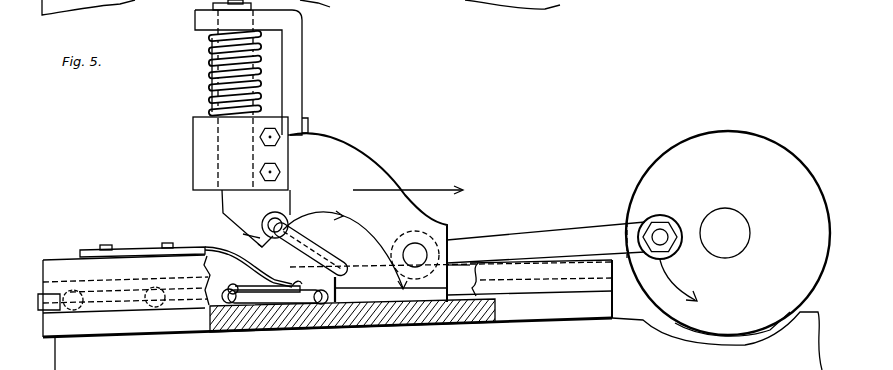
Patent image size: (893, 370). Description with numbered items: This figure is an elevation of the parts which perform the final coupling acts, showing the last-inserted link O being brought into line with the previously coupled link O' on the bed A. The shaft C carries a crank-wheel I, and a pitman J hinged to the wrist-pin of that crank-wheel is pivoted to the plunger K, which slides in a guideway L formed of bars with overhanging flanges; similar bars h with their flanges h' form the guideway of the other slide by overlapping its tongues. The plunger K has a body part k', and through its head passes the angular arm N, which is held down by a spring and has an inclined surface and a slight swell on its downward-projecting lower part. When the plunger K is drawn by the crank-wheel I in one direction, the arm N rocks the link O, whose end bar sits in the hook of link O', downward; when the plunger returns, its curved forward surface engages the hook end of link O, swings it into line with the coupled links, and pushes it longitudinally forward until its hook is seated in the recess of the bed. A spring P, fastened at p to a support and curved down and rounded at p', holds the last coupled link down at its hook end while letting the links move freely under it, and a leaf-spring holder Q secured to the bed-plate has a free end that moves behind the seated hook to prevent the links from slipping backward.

The bed frame A is at (430, 312).
The spring-holder Q is at (357, 323).
The spring P is at (142, 244).
The fastening point of spring p is at (136, 241).
The rounded portion of spring p' is at (253, 270).
The link O' is at (275, 324).
The guideway L is at (310, 262).
The link O is at (292, 225).
The arm N is at (256, 218).
The bars h is at (244, 73).
The flanges h' is at (251, 67).
The plunger K is at (368, 217).
The body part k' is at (345, 250).
The pitman J is at (536, 240).
The crank-wheel I is at (728, 233).
The shaft C is at (725, 233).